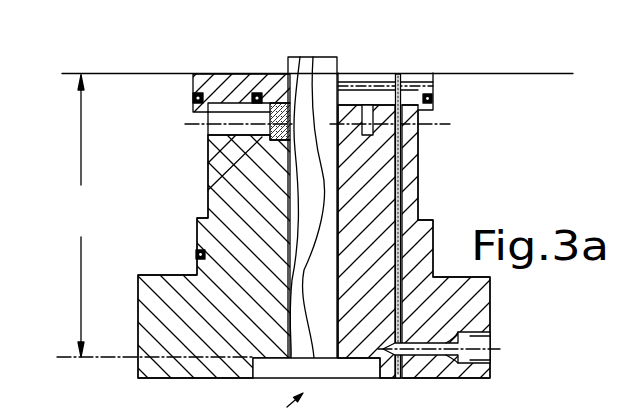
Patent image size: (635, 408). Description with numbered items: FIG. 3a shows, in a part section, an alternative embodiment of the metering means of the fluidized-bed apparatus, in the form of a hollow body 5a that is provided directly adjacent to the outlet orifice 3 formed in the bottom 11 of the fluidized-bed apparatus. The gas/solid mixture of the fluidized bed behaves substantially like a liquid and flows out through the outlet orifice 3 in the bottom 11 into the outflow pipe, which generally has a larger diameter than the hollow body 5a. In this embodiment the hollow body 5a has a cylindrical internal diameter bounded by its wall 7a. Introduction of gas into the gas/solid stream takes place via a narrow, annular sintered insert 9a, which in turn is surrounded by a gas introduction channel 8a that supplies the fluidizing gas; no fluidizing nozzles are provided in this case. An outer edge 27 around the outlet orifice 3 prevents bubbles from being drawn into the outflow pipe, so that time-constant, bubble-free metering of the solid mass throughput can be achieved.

The outlet orifice 3 is at (338, 75).
The hollow body 5a is at (457, 221).
The wall 7a is at (300, 57).
The gas introduction channel 8a is at (257, 133).
The annular sintered insert 9a is at (291, 153).
The bottom 11 is at (501, 72).
The outer edge 27 is at (337, 58).